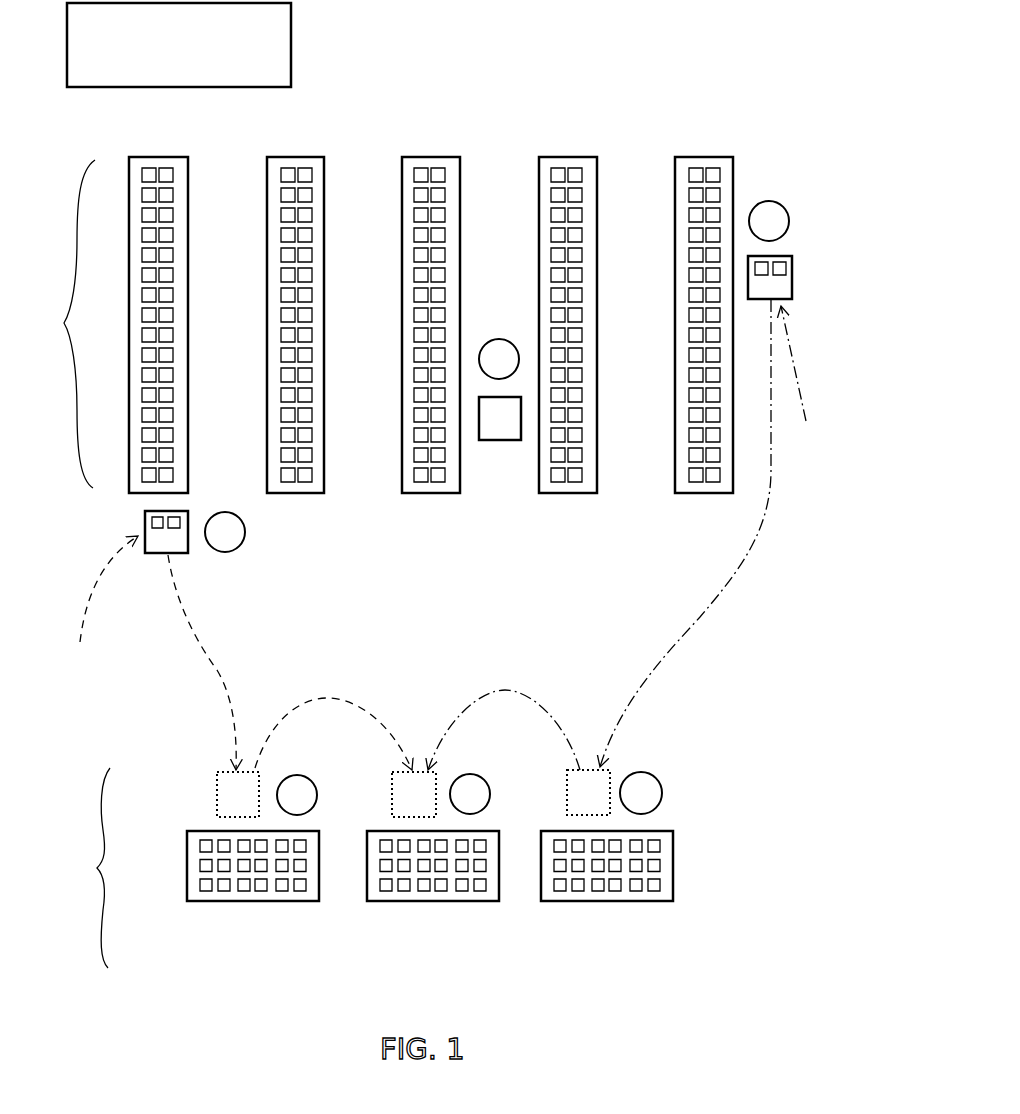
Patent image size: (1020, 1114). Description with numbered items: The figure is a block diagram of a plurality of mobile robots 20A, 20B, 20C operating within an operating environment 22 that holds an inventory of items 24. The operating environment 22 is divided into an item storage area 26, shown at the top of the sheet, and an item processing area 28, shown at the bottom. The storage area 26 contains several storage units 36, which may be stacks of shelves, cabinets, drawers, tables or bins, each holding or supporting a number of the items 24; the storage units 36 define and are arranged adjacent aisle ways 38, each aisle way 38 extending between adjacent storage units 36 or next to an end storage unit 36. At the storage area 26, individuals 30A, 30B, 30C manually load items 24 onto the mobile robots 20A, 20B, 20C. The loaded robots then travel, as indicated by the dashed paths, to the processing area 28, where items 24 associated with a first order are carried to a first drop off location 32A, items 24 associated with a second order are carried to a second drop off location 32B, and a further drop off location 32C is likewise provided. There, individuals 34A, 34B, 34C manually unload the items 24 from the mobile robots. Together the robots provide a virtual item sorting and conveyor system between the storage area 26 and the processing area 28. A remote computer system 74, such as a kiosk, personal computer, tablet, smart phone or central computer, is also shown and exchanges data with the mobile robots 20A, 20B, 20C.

The operating environment 22 is at (756, 78).
The remote computer system 74 is at (185, 55).
The item storage area 26 is at (61, 324).
The item processing area 28 is at (78, 868).
The storage unit 36 is at (142, 156).
The item 24 is at (168, 196).
The aisle way 38 is at (228, 177).
The individual 30A is at (243, 540).
The individual 30B is at (773, 200).
The individual 30C is at (500, 338).
The mobile robot 20A is at (155, 553).
The mobile robot 20B is at (793, 284).
The mobile robot 20C is at (497, 442).
The first drop off location 32A is at (200, 808).
The second drop off location 32B is at (682, 802).
The drop off location 32C is at (373, 808).
The individual 34A is at (290, 772).
The individual 34B is at (650, 772).
The individual 34C is at (467, 773).